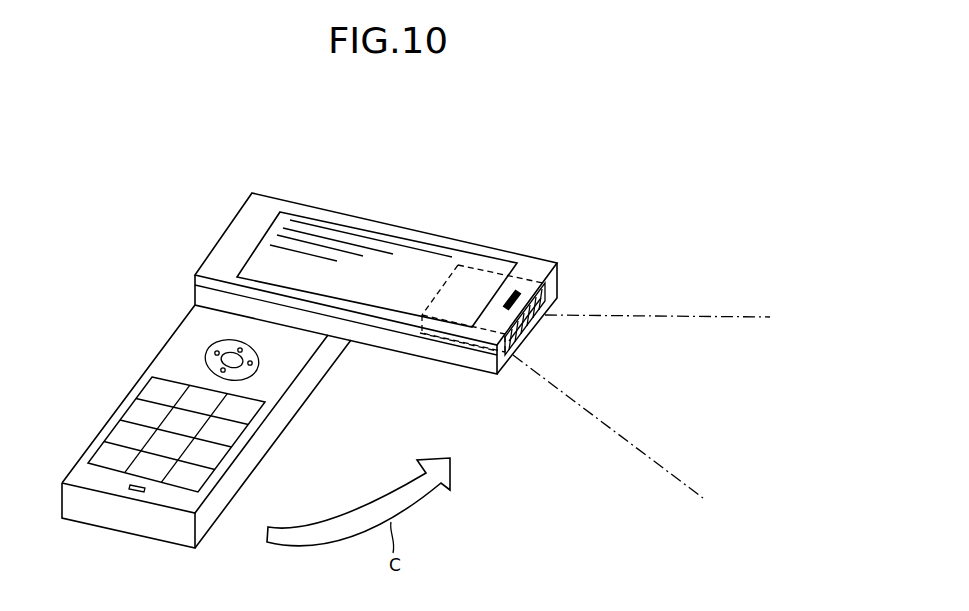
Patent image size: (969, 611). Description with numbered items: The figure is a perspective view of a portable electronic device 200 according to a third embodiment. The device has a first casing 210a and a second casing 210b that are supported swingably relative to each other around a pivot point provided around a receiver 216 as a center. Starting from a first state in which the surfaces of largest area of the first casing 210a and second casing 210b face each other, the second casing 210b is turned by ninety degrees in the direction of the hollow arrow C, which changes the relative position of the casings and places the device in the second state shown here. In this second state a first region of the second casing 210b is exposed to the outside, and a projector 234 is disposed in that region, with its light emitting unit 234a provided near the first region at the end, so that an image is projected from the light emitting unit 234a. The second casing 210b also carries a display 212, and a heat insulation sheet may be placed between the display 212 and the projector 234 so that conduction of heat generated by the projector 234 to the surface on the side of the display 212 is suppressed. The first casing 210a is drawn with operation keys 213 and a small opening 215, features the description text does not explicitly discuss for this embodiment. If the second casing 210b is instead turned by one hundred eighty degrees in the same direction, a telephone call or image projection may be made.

The portable electronic device 200 is at (504, 142).
The second casing 210b is at (348, 218).
The first casing 210a is at (151, 355).
The display 212 is at (410, 278).
The operation keys 213 is at (132, 437).
The microphone 215 is at (133, 493).
The receiver 216 is at (519, 292).
The projector 234 is at (497, 272).
The light emitting unit 234a is at (527, 341).